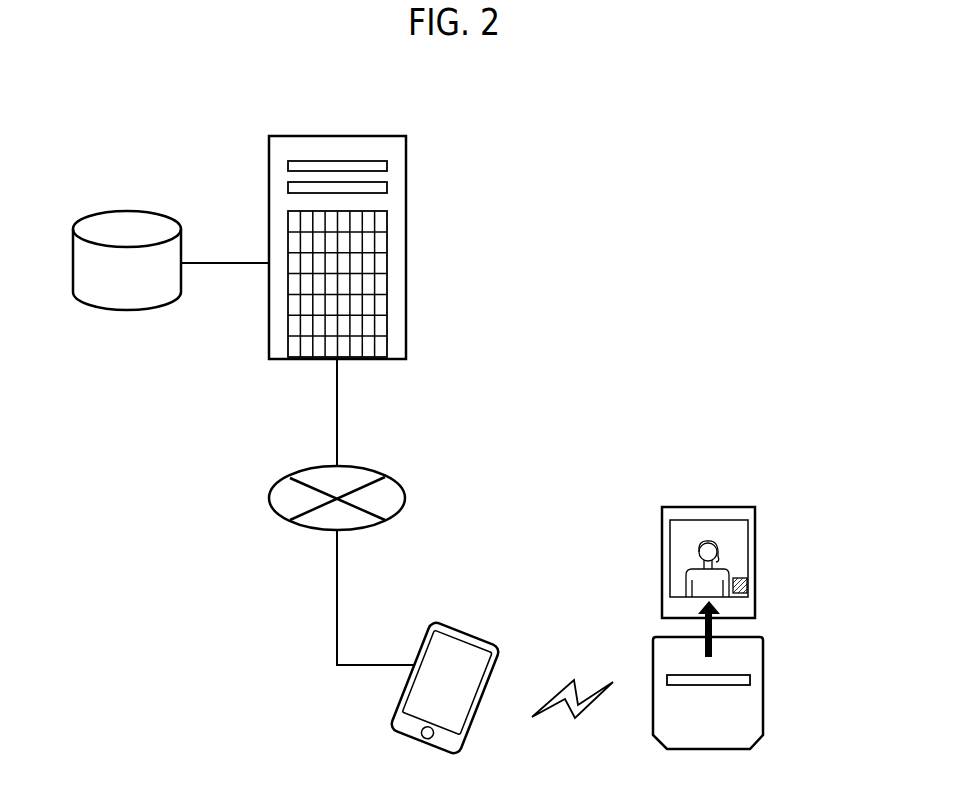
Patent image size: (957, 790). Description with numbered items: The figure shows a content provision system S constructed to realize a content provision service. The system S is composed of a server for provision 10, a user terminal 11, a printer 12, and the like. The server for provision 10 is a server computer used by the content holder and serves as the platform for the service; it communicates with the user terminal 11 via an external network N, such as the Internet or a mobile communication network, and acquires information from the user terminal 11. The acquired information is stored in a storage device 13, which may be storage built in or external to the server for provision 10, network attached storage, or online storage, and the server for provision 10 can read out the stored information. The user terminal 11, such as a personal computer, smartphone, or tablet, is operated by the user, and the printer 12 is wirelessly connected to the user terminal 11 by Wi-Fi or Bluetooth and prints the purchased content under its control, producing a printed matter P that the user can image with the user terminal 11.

The server for provision 10 is at (415, 152).
The user terminal 11 is at (478, 627).
The printer 12 is at (775, 712).
The storage device 13 is at (127, 220).
The external network N is at (378, 468).
The printed matter P is at (762, 533).
The content provision system S is at (638, 168).